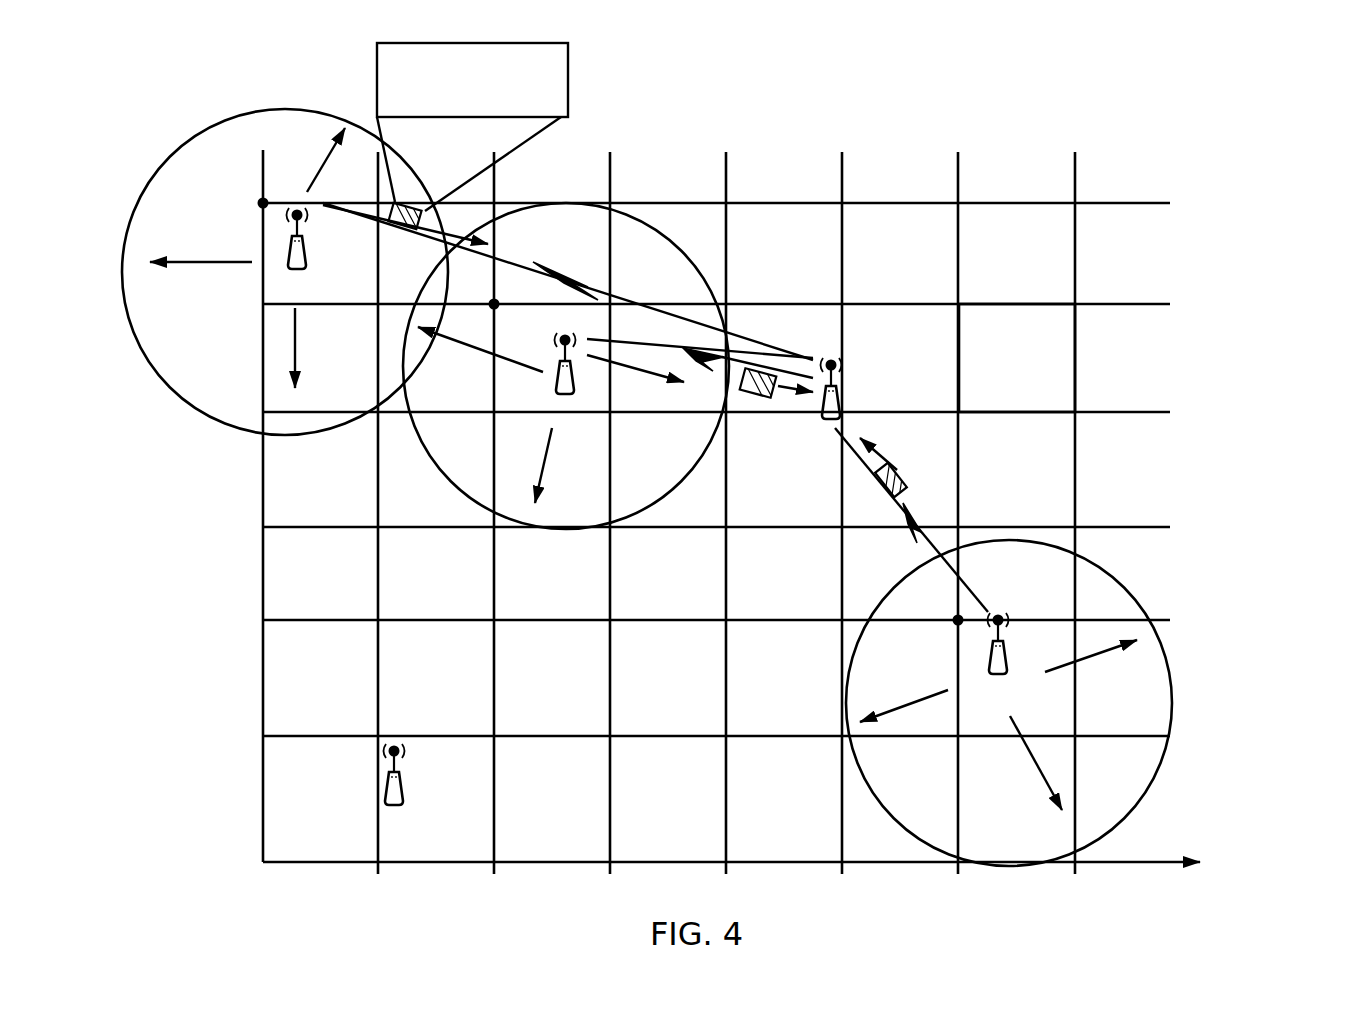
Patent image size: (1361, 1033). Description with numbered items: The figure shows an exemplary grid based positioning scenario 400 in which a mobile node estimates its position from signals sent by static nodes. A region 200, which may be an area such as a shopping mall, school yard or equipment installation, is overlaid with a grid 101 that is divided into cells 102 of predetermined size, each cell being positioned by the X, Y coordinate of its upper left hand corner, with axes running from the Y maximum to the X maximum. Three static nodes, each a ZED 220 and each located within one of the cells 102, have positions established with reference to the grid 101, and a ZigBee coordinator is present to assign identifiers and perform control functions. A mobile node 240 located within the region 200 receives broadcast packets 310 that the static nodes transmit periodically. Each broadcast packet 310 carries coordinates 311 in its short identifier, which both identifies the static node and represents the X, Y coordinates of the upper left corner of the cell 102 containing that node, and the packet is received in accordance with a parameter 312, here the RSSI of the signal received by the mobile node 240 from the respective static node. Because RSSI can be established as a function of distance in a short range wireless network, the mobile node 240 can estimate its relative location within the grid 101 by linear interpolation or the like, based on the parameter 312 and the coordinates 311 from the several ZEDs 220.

The grid 101 is at (1133, 113).
The cell 102 is at (970, 358).
The region 200 is at (778, 142).
The static node (ZED) 220 is at (307, 227).
The mobile node (M_ZED0) 240 is at (843, 385).
The broadcast packet 310 is at (404, 233).
The coordinates 311 is at (568, 75).
The parameter 312 is at (546, 166).
The grid based positioning diagram 400 is at (1274, 120).